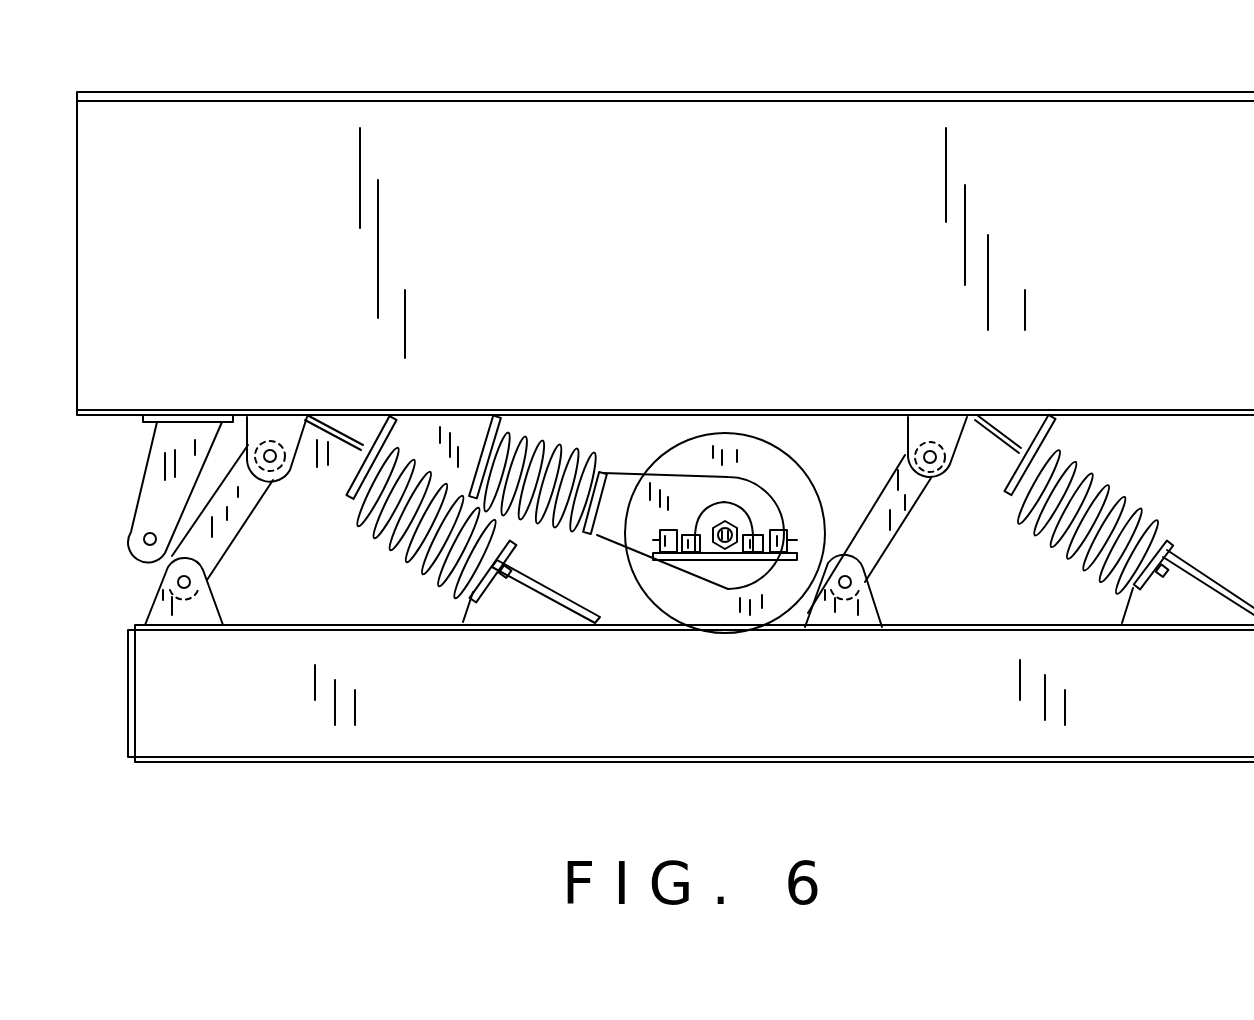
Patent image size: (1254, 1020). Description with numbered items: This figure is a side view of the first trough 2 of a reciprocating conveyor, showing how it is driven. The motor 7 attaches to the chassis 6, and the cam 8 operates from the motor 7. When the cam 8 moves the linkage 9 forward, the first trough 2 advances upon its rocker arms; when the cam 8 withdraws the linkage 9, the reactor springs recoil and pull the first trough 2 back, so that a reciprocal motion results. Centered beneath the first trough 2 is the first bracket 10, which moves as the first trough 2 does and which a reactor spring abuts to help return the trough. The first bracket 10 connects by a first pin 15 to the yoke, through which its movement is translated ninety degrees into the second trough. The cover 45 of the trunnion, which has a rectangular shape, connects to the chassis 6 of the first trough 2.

The first trough 2 is at (1001, 131).
The chassis 6 is at (332, 735).
The motor 7 is at (757, 462).
The cam 8 is at (726, 490).
The linkage 9 is at (536, 445).
The first bracket 10 is at (178, 463).
The first pin 15 is at (143, 535).
The cover 45 is at (128, 705).